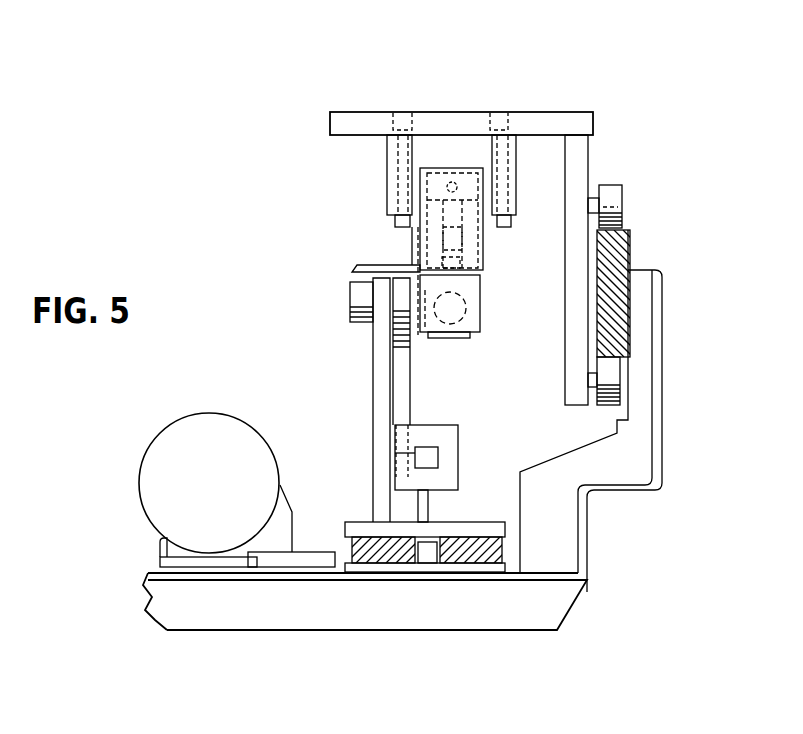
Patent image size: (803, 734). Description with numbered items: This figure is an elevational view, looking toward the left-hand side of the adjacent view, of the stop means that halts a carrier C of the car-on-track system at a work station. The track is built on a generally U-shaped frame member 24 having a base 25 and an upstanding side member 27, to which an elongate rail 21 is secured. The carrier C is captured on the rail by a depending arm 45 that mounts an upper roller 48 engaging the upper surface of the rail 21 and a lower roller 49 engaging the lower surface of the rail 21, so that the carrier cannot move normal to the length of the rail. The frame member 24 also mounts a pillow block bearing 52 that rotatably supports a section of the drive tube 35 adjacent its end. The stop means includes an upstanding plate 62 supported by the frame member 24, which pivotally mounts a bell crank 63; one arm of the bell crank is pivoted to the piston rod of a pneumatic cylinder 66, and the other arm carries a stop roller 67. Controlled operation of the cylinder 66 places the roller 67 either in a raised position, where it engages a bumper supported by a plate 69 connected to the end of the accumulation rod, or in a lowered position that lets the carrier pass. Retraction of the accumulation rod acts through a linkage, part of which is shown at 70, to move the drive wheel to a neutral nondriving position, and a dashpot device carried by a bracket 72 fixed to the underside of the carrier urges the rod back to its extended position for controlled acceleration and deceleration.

The carrier C is at (557, 127).
The depending arm 45 is at (575, 160).
The upper roller 48 is at (610, 197).
The elongate rail 21 is at (618, 243).
The upstanding side member 27 is at (658, 313).
The lower nut 49 is at (610, 373).
The bracket 72 is at (393, 157).
The linkage part 70 is at (375, 263).
The plate 69 is at (420, 277).
The stop roller 67 is at (438, 335).
The upstanding plate 62 is at (376, 345).
The bell crank 63 is at (402, 400).
The cylinder 66 is at (422, 425).
The pillow block bearing 52 is at (277, 525).
The drive tube 35 is at (197, 433).
The frame member 24 is at (592, 600).
The base 25 is at (523, 613).